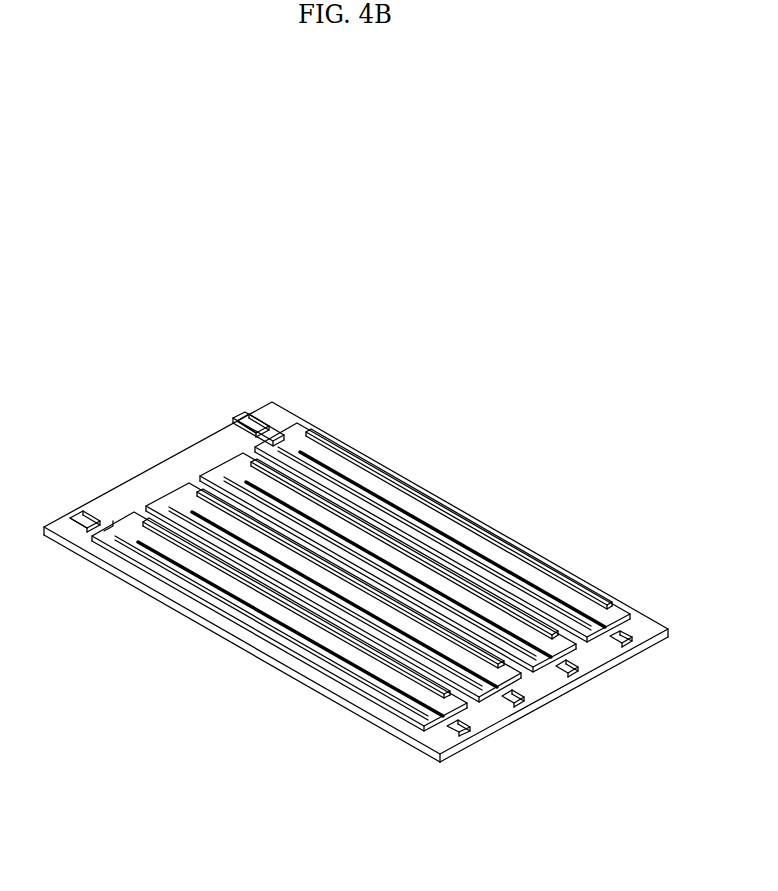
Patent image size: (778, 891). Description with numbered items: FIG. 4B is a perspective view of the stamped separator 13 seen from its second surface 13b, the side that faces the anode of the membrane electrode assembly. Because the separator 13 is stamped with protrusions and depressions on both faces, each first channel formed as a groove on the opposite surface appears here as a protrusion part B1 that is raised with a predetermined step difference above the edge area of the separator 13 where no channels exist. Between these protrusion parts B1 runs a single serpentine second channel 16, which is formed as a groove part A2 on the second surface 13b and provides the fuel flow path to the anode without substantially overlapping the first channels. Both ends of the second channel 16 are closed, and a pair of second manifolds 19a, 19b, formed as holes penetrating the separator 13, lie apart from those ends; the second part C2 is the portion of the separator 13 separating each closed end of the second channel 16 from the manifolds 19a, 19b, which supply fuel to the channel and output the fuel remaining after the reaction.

The separator 13 is at (399, 287).
The second surface 13b is at (362, 579).
The second channel 16 is at (277, 441).
The second manifold 19a is at (248, 416).
The second manifold 19b is at (80, 511).
The groove part A2 is at (520, 600).
The protrusion part B1 is at (487, 548).
The second part C2 is at (268, 425).